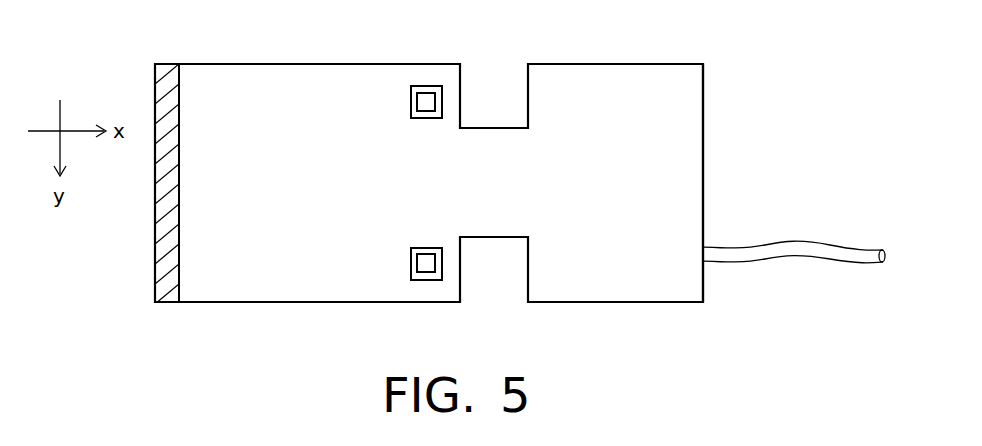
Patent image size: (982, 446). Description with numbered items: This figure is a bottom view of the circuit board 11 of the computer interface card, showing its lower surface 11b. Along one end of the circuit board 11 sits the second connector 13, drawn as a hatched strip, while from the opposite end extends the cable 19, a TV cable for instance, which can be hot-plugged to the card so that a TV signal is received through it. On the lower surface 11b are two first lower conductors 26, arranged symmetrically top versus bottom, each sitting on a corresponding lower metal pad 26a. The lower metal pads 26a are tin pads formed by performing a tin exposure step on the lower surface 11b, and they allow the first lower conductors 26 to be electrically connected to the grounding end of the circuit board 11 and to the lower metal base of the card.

The circuit board 11 is at (682, 62).
The lower surface 11b is at (690, 156).
The second connector 13 is at (162, 80).
The cable 19 is at (820, 247).
The first lower conductors 26 is at (424, 95).
The lower metal pads 26a is at (437, 100).